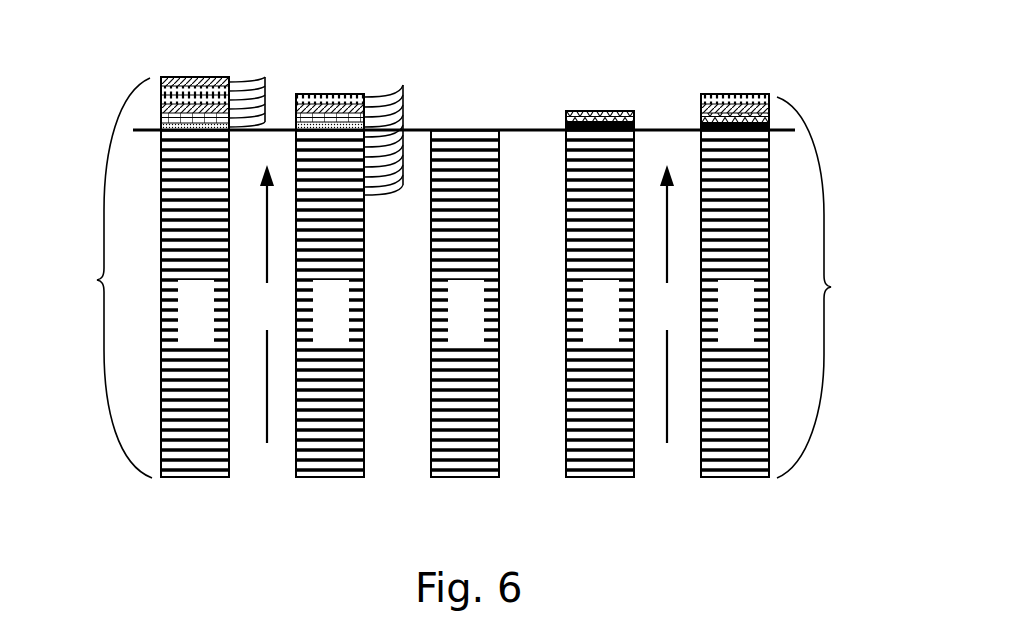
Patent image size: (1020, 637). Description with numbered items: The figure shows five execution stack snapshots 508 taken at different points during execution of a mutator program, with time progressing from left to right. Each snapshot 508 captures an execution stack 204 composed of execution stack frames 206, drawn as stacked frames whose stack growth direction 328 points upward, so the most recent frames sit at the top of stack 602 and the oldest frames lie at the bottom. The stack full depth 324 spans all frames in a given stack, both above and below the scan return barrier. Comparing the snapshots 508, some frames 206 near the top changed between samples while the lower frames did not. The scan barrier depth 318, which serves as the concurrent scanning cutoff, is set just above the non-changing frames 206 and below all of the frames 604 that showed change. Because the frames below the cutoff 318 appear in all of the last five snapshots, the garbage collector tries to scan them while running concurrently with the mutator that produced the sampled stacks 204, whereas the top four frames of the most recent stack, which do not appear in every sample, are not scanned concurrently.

The execution stack 204 is at (197, 52).
The execution stack frame 206 is at (403, 89).
The stack depth of an installed scan return barrier 318 is at (522, 129).
The stack full depth 324 is at (97, 279).
The stack growth direction 328 is at (466, 304).
The snapshot 508 is at (433, 518).
The top of stack 602 is at (441, 129).
The frames above scan return barrier 604 is at (267, 77).